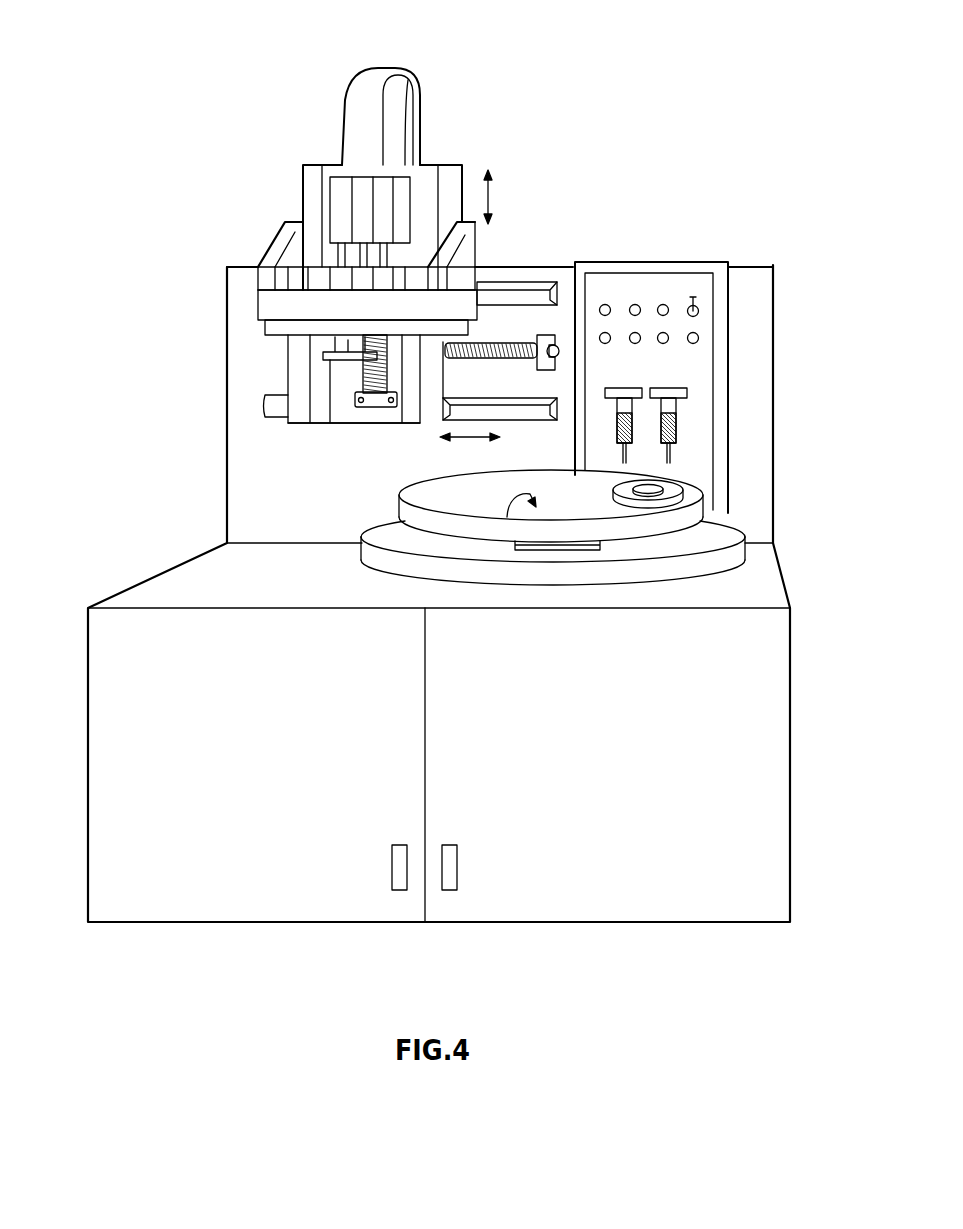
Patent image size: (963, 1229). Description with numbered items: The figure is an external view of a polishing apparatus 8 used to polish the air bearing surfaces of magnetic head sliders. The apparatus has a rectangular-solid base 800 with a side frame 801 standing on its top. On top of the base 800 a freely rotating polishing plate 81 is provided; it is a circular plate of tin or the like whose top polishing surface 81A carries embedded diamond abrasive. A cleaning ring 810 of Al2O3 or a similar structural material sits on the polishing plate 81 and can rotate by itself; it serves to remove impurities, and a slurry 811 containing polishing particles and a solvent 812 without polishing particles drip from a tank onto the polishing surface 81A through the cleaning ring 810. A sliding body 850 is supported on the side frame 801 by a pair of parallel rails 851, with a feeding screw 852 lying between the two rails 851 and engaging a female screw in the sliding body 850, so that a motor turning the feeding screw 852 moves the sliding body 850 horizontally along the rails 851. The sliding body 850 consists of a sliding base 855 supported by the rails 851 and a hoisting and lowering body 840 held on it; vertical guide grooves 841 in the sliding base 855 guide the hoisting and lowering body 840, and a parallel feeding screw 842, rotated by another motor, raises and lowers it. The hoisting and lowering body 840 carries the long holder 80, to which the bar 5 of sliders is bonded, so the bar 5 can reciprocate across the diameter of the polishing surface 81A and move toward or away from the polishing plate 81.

The polishing apparatus 8 is at (113, 121).
The base 800 is at (224, 558).
The side frame 801 is at (747, 263).
The slurry 811 is at (625, 388).
The solvent 812 is at (676, 430).
The polishing plate 81 is at (610, 568).
The polishing surface 81A is at (507, 518).
The cleaning ring 810 is at (680, 503).
The sliding body 850 is at (153, 283).
The hoisting and lowering body 840 is at (268, 303).
The sliding base 855 is at (298, 340).
The holder 80 is at (325, 350).
The bar 5 is at (333, 378).
The feeding screw 842 is at (358, 386).
The guide grooves 841 is at (415, 424).
The rails 851 is at (507, 410).
The feeding screw 852 is at (528, 337).